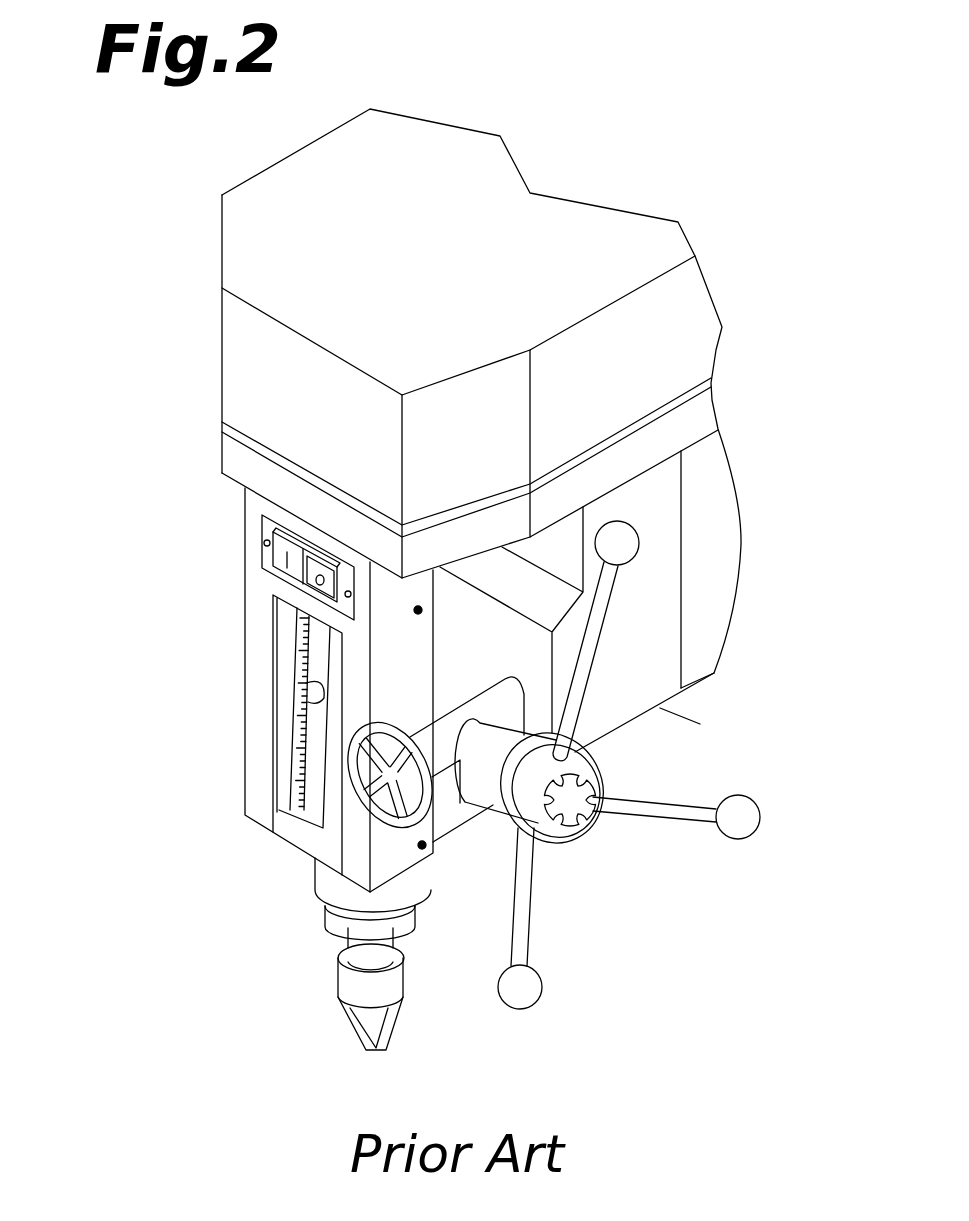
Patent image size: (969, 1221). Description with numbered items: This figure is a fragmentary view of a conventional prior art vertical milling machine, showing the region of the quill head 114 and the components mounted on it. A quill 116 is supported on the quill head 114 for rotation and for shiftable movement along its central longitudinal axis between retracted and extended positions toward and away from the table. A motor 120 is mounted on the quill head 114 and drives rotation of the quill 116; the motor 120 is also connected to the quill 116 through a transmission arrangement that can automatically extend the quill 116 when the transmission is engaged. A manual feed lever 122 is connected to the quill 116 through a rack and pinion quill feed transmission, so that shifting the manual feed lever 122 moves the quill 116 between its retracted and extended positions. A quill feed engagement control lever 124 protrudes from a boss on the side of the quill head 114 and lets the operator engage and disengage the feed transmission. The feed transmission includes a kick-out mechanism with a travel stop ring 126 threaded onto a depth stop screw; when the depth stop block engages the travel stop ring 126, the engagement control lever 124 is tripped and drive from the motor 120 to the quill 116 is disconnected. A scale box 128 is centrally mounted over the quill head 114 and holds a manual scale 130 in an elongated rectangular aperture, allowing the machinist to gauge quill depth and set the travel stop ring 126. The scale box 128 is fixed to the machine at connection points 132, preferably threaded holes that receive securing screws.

The motor 120 is at (233, 330).
The quill head 114 is at (247, 511).
The manual scale 130 is at (305, 665).
The scale box 128 is at (256, 745).
The travel stop ring 126 is at (328, 888).
The quill 116 is at (335, 922).
The quill feed engagement control lever 124 is at (400, 833).
The manual feed lever 122 is at (538, 998).
The connection points 132 is at (415, 615).